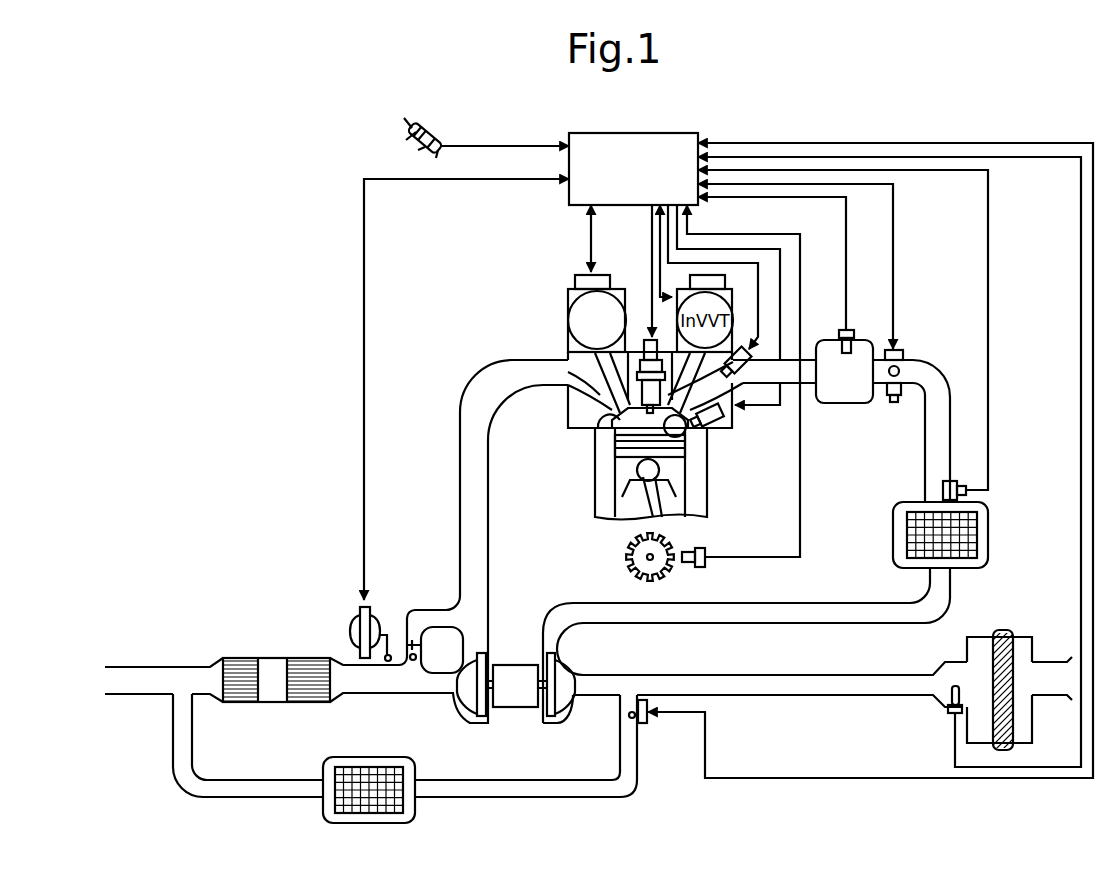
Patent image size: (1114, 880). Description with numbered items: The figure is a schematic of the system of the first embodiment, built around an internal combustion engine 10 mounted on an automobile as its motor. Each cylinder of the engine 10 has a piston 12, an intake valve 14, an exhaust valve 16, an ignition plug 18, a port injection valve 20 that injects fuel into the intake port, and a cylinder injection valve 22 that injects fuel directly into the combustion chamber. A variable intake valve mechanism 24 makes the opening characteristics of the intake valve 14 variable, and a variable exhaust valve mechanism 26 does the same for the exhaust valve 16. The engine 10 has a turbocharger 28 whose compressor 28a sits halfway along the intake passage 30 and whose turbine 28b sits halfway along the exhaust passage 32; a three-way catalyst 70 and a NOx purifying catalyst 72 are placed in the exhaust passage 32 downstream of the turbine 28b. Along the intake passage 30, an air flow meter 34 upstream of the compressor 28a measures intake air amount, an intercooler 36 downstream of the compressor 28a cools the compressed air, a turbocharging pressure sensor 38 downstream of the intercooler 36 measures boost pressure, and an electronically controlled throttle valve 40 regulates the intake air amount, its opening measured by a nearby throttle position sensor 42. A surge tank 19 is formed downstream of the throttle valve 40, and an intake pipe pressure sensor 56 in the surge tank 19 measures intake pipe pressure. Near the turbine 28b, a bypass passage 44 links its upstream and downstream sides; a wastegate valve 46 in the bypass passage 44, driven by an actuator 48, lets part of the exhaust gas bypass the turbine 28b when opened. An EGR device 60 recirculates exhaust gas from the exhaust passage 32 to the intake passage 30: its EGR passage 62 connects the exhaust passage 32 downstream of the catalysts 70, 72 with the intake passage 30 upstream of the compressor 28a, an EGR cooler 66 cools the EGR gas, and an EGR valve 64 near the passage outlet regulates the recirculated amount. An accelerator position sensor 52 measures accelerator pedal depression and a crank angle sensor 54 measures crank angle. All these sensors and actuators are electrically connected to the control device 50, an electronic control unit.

The internal combustion engine 10 is at (618, 436).
The piston 12 is at (615, 478).
The intake valve 14 is at (665, 437).
The exhaust valve 16 is at (600, 395).
The ignition plug 18 is at (640, 350).
The surge tank 19 is at (842, 403).
The port injection valve 20 is at (748, 385).
The cylinder injection valve 22 is at (725, 428).
The variable intake valve mechanism 24 is at (745, 345).
The variable exhaust valve mechanism 26 is at (568, 320).
The turbocharger 28 is at (526, 674).
The compressor 28a is at (585, 670).
The turbine 28b is at (462, 700).
The intake passage 30 is at (948, 380).
The exhaust passage 32 is at (458, 505).
The air flow meter 34 is at (948, 712).
The intercooler 36 is at (990, 542).
The turbocharging pressure sensor 38 is at (955, 478).
The electronically controlled throttle valve 40 is at (905, 360).
The throttle position sensor 42 is at (892, 403).
The bypass passage 44 is at (407, 618).
The wastegate valve 46 is at (413, 662).
The actuator 48 is at (355, 617).
The control device 50 is at (686, 133).
The accelerator position sensor 52 is at (445, 140).
The crank angle sensor 54 is at (710, 553).
The intake pipe pressure sensor 56 is at (850, 333).
The EGR device 60 is at (591, 483).
The EGR passage 62 is at (281, 780).
The EGR valve 64 is at (634, 718).
The EGR cooler 66 is at (362, 757).
The three-way catalyst 70 is at (305, 658).
The NOx purifying catalyst 72 is at (243, 658).